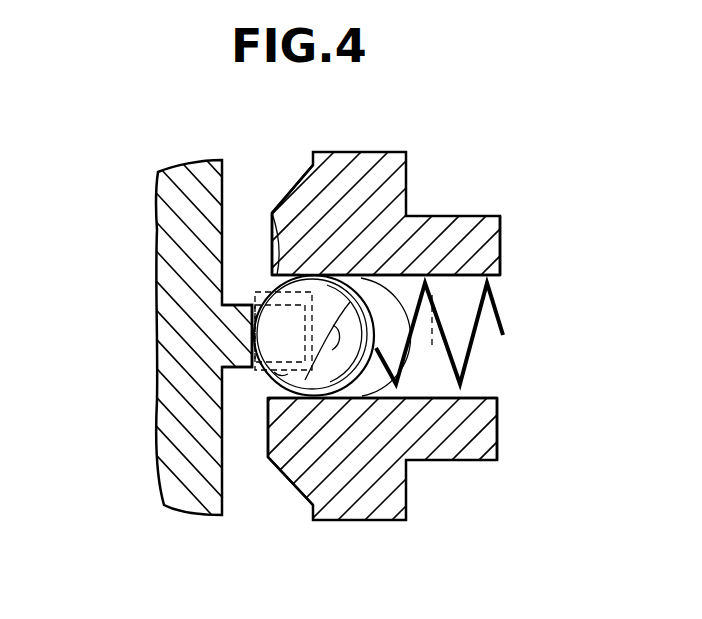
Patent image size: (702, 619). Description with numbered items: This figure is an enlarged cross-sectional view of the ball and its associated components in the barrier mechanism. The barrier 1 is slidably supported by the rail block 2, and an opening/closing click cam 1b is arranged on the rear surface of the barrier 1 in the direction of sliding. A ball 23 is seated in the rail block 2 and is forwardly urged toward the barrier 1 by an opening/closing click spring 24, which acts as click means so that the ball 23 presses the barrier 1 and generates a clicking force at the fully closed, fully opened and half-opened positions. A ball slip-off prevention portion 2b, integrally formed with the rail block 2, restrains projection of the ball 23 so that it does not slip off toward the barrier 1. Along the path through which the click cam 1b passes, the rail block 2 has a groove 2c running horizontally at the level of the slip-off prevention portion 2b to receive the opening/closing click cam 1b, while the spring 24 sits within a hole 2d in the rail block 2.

The barrier 1 is at (160, 190).
The opening/closing click cam 1b is at (242, 338).
The rail block 2 is at (398, 183).
The ball slip-off prevention portion 2b is at (272, 215).
The groove 2c is at (263, 386).
The hole 2d is at (487, 278).
The ball 23 is at (256, 296).
The opening/closing click spring 24 is at (488, 355).